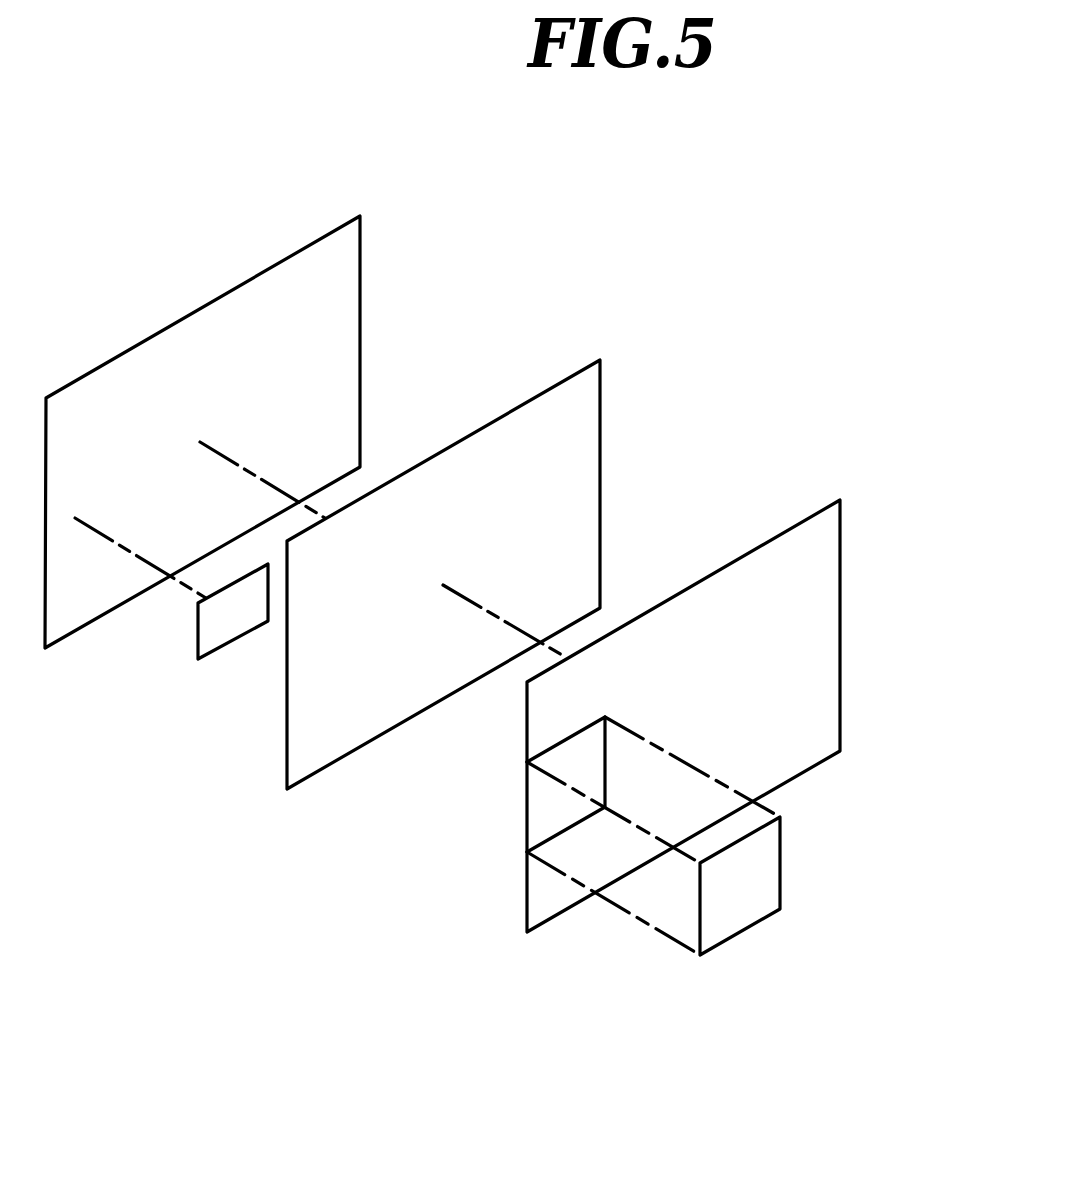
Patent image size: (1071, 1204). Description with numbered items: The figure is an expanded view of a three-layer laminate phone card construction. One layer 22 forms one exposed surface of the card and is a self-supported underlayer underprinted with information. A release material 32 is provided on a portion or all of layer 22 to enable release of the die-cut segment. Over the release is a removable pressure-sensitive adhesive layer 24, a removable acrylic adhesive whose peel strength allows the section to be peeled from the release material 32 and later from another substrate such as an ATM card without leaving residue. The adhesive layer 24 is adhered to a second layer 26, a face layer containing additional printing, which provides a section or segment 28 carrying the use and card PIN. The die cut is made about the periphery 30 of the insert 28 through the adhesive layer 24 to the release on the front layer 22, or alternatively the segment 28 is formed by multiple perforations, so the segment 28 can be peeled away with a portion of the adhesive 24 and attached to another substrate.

The front layer 22 is at (333, 286).
The adhesive layer 24 is at (580, 422).
The second layer 26 is at (825, 562).
The segment 28 is at (738, 910).
The periphery 30 is at (562, 830).
The release material 32 is at (215, 633).